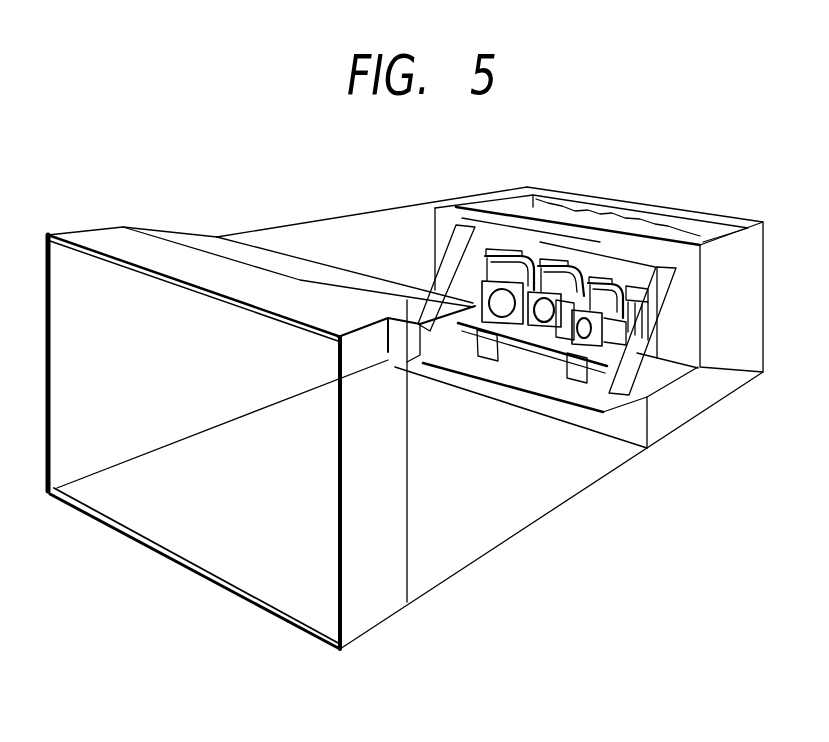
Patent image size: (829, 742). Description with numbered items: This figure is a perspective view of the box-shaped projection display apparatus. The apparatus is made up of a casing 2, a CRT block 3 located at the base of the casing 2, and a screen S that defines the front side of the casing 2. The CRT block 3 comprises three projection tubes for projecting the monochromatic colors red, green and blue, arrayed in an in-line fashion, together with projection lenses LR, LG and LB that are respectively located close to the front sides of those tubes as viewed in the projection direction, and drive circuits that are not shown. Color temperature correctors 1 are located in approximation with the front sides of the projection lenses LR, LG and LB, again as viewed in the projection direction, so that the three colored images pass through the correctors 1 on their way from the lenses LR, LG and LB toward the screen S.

The color temperature correctors 1 is at (540, 304).
The casing 2 is at (390, 207).
The CRT block 3 is at (668, 418).
The screen S is at (188, 553).
The projection lens LR is at (486, 274).
The projection lens LG is at (560, 300).
The projection lens LB is at (603, 372).